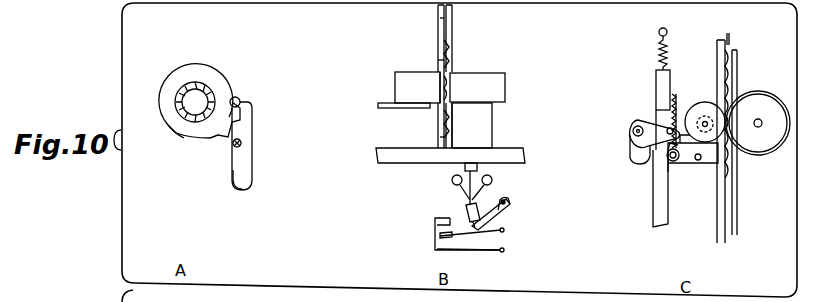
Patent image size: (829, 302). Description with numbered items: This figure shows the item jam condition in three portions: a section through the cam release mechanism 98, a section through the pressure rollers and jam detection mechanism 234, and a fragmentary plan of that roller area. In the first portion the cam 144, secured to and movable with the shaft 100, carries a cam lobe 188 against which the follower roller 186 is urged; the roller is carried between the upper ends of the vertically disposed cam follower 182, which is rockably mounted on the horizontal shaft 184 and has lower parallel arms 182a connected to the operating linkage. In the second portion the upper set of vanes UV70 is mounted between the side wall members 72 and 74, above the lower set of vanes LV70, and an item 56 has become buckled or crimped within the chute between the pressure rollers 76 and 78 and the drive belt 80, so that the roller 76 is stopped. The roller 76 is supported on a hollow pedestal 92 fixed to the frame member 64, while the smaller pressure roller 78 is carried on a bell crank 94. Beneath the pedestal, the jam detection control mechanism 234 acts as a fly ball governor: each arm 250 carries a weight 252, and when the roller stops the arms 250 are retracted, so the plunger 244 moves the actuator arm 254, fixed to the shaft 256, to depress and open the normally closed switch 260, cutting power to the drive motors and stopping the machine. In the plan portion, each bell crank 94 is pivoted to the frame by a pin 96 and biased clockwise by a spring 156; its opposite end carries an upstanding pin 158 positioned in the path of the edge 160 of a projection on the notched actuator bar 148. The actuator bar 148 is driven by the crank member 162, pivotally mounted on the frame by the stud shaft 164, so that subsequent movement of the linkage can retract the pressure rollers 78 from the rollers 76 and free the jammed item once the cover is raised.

The cam release mechanism 98 is at (226, 72).
The shaft 100 is at (184, 90).
The follower roller 186 is at (241, 100).
The cam follower 182 is at (253, 120).
The horizontal shaft 184 is at (243, 145).
The parallel arms 182a is at (244, 178).
The cam 144 is at (178, 135).
The cam lobe 188 is at (215, 140).
The side wall member 74 is at (452, 17).
The upper set of vanes UV70 is at (440, 18).
The side wall member 72 is at (438, 30).
The item 56 is at (448, 46).
The pressure roller 78 is at (398, 72).
The roller 76 is at (492, 78).
The drive belt 80 is at (447, 75).
The bell crank 94 is at (386, 103).
The hollow pedestal 92 is at (494, 135).
The lower set of vanes LV70 is at (440, 137).
The frame member 64 is at (378, 163).
The weight 252 is at (452, 178).
The arm 250 is at (460, 190).
The plunger 244 is at (465, 209).
The jam detection control mechanism 234 is at (410, 201).
The shaft 256 is at (513, 206).
The actuator arm 254 is at (508, 216).
The switch 260 is at (432, 242).
The crank member 162 is at (655, 49).
The spring 156 is at (659, 112).
The stud shaft 164 is at (632, 134).
The actuator bar 148 is at (652, 206).
The pin 158 is at (667, 158).
The edge 160 is at (676, 162).
The pin 96 is at (702, 158).